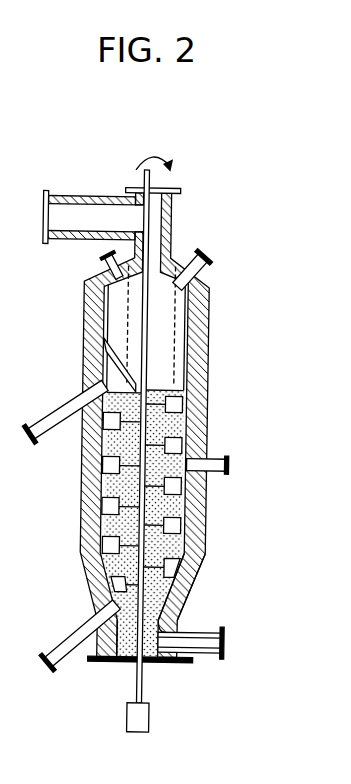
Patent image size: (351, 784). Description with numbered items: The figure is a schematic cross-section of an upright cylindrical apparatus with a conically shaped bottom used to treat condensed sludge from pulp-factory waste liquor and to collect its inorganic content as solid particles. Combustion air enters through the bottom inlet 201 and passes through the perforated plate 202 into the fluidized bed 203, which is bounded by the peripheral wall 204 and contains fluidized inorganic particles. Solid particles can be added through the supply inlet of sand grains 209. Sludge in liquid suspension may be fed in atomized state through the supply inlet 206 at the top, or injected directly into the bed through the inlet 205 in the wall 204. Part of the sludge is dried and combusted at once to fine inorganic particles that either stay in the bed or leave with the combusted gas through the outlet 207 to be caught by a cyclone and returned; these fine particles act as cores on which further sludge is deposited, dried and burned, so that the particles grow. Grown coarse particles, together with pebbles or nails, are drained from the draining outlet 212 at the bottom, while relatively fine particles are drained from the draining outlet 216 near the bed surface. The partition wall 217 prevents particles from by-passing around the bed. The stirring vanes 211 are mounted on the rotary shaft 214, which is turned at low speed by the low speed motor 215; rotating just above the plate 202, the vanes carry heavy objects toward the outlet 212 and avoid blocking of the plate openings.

The inlet 201 is at (214, 655).
The perforated plate 202 is at (184, 629).
The fluidized bed 203 is at (199, 578).
The peripheral wall 204 is at (199, 517).
The inlet 205 is at (224, 457).
The supply inlet 206 is at (206, 255).
The outlet 207 is at (89, 198).
The supply inlet of sand grains 209 is at (105, 268).
The stirring vanes 211 is at (115, 511).
The draining outlet 212 is at (80, 641).
The rotary shaft 214 is at (144, 687).
The low speed motor 215 is at (157, 718).
The draining outlet 216 is at (60, 414).
The partition wall 217 is at (112, 360).